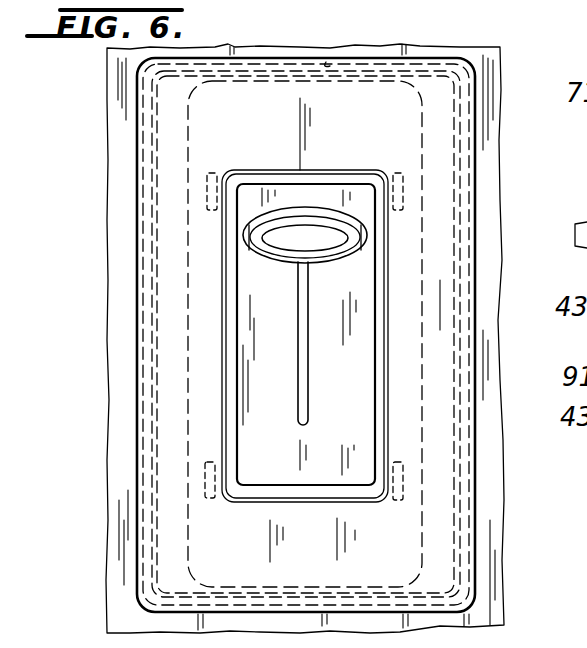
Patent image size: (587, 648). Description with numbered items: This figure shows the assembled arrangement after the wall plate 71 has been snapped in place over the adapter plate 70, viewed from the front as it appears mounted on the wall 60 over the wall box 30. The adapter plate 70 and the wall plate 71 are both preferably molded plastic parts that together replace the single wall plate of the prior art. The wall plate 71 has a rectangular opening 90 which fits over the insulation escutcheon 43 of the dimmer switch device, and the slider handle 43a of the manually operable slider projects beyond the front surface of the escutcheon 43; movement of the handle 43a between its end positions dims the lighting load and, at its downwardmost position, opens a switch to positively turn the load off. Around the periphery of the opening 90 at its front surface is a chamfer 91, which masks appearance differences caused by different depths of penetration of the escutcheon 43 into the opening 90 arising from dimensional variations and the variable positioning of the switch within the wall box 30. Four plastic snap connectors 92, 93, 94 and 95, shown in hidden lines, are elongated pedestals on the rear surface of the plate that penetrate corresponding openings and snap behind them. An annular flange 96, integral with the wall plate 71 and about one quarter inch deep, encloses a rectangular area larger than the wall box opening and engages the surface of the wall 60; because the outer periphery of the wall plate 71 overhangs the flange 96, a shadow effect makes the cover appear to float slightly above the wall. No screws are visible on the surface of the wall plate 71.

The wall box 30 is at (385, 82).
The wall 60 is at (118, 115).
The adapter plate portion 70 is at (190, 558).
The wall plate portion 71 is at (176, 527).
The rectangular opening 90 is at (230, 387).
The chamfer 91 is at (226, 311).
The snap connector 92 is at (207, 191).
The snap connector 93 is at (205, 477).
The snap connector 94 is at (404, 193).
The snap connector 95 is at (404, 482).
The annular flange 96 is at (332, 66).
The insulation escutcheon 43 is at (253, 350).
The slider handle 43a is at (243, 238).